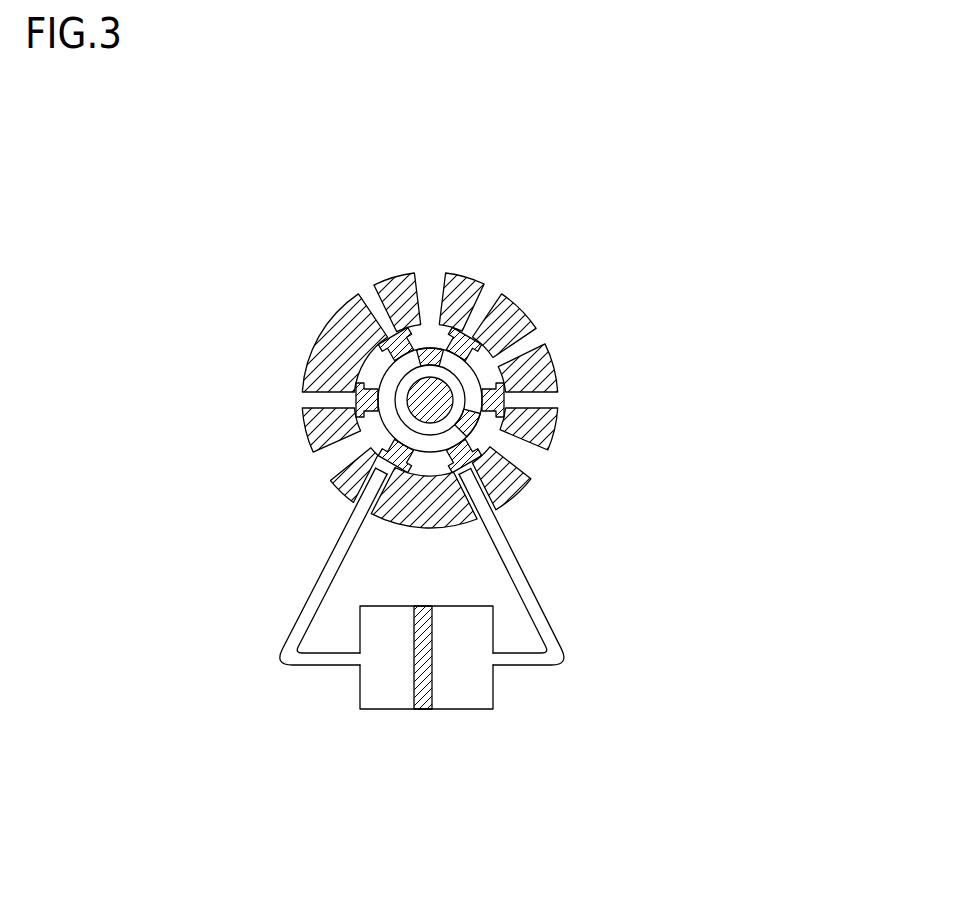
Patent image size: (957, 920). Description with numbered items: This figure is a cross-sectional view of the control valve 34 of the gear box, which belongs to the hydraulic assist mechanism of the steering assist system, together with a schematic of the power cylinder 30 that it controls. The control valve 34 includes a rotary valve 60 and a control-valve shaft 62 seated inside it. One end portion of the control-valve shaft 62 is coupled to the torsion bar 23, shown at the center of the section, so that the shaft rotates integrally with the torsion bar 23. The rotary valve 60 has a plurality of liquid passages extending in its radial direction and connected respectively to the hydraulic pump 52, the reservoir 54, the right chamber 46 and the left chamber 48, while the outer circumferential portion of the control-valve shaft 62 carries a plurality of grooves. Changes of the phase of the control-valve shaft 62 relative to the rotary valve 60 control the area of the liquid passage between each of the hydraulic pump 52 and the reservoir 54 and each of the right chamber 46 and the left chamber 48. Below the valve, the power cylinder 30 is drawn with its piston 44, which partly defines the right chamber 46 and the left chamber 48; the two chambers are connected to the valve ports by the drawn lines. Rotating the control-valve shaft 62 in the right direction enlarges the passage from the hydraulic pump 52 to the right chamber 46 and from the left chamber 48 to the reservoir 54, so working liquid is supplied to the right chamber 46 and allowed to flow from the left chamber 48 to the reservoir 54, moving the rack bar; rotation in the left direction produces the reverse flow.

The control valve 34 is at (583, 260).
The rotary valve 60 is at (332, 340).
The control-valve shaft 62 is at (380, 383).
The torsion bar 23 is at (452, 392).
The hydraulic pump 52 is at (280, 487).
The reservoir 54 is at (543, 335).
The power cylinder 30 is at (442, 722).
The left chamber 48 is at (372, 700).
The right chamber 46 is at (537, 700).
The piston 44 is at (418, 606).